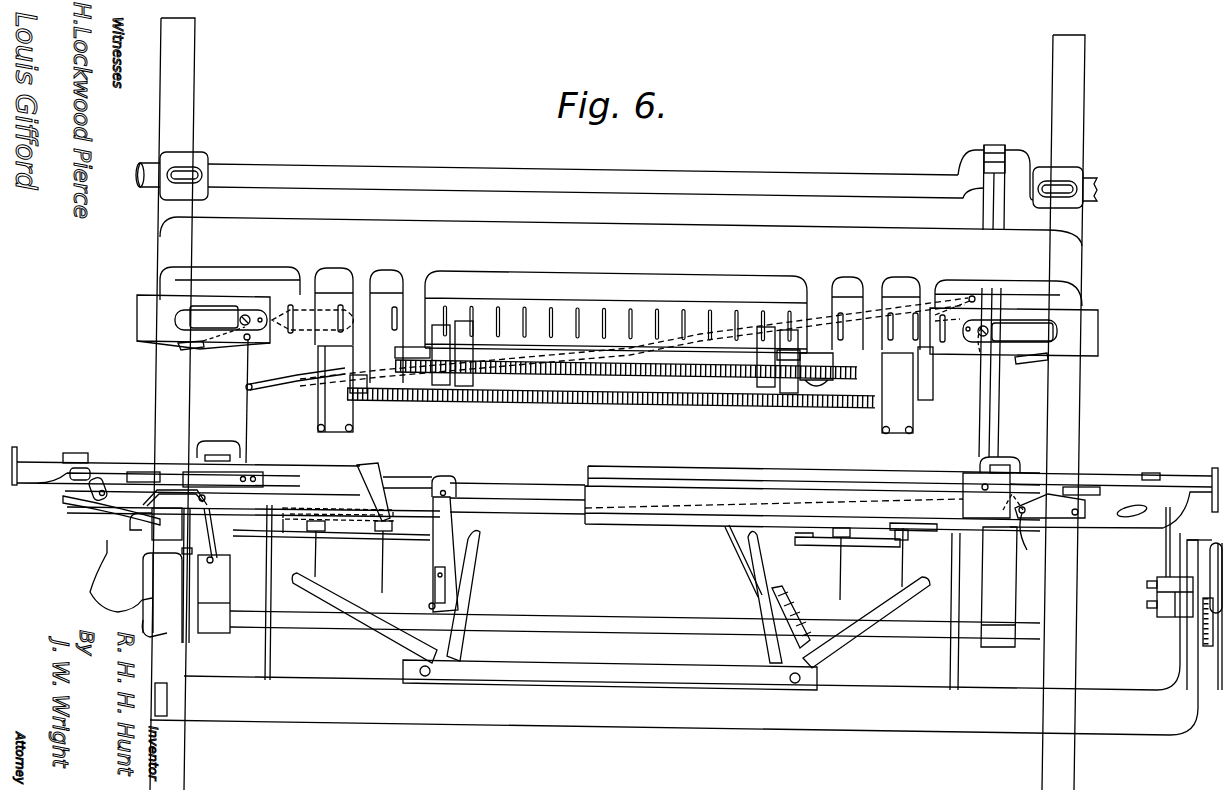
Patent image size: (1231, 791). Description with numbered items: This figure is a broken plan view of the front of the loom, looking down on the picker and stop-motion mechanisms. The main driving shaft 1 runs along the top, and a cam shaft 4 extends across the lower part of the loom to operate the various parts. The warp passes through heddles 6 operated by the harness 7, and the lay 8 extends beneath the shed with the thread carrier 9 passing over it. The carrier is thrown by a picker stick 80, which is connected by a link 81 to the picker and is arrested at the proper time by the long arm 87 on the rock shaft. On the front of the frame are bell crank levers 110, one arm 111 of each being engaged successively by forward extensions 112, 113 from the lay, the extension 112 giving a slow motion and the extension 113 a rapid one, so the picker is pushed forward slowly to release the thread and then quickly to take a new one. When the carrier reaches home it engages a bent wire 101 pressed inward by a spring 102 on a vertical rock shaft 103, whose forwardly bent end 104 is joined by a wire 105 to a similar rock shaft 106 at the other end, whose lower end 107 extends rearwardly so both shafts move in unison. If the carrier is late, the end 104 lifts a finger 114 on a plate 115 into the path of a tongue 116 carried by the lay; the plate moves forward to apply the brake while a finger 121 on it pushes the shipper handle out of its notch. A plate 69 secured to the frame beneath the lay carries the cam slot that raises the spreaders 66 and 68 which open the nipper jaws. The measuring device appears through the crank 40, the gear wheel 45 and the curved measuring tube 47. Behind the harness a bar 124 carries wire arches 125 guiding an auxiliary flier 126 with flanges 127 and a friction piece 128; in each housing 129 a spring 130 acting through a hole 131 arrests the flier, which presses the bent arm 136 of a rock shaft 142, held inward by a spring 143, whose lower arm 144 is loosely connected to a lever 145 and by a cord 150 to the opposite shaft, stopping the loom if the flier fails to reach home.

The main driving shaft 1 is at (311, 166).
The cam shaft 4 is at (513, 483).
The heddles 6 is at (598, 403).
The harness 7 is at (767, 383).
The lay 8 is at (360, 472).
The thread carrier 9 is at (173, 473).
The crank 40 is at (1170, 616).
The gear wheel 45 is at (1207, 640).
The measuring tube 47 is at (1223, 695).
The spreader rod 66 is at (1185, 487).
The second spreader 68 is at (983, 483).
The plate 69 is at (263, 644).
The picker stick 80 is at (452, 490).
The link 81 is at (407, 483).
The arm 87 is at (293, 534).
The bent wire 101 is at (153, 482).
The spring 102 is at (78, 511).
The vertical rock shaft 103 is at (197, 497).
The forwardly projecting arm 104 is at (217, 563).
The wire 105 is at (535, 506).
The rock shaft 106 is at (1024, 523).
The rearwardly extending lower end 107 is at (1018, 483).
The bell crank levers 110 is at (437, 654).
The arm 111 is at (370, 643).
The forward extension 112 is at (318, 558).
The forward extension 113 is at (384, 558).
The finger 114 is at (200, 568).
The plate 115 is at (167, 598).
The tongue 116 is at (157, 533).
The finger 121 is at (110, 595).
The bar or frame 124 is at (648, 310).
The wire arches 125 is at (575, 310).
The auxiliary flier 126 is at (323, 315).
The flanges 127 is at (295, 305).
The friction piece 128 is at (317, 333).
The housing 129 is at (150, 320).
The spring 130 is at (199, 306).
The hole 131 is at (220, 315).
The bent arm 136 is at (187, 347).
The vertical rock shaft 142 is at (248, 336).
The spring 143 is at (197, 348).
The lower arm 144 is at (248, 437).
The lever 145 is at (217, 545).
The cord 150 is at (283, 388).